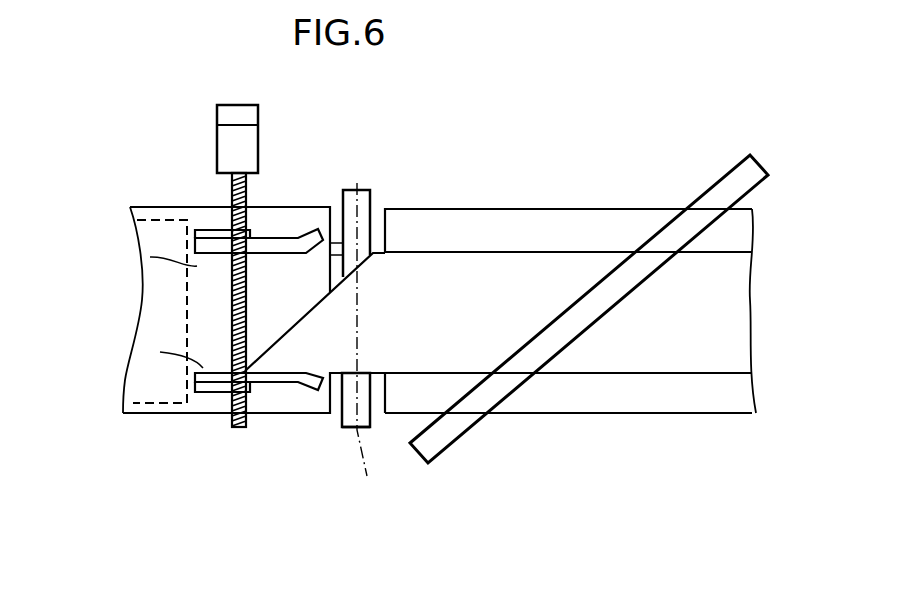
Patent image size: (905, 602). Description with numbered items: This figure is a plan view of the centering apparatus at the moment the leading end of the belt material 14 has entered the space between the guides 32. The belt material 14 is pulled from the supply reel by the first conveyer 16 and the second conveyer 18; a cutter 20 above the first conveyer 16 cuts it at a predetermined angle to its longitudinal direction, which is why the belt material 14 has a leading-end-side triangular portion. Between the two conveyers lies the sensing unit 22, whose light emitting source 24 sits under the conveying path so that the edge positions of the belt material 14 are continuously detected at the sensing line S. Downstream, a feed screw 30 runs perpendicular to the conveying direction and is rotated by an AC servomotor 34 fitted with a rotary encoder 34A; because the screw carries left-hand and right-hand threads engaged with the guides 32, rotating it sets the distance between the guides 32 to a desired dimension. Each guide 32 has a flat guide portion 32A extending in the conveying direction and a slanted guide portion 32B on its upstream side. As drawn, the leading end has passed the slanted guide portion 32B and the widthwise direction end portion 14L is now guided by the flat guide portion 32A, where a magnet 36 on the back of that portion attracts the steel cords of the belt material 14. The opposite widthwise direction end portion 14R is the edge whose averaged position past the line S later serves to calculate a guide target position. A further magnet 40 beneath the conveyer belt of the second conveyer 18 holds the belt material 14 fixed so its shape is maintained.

The belt material 14 is at (500, 343).
The widthwise direction end portion 14R is at (455, 252).
The widthwise direction end portion 14L is at (402, 375).
The first conveyer 16 is at (600, 415).
The second conveyer 18 is at (173, 415).
The cutter 20 is at (697, 200).
The sensing unit 22 is at (368, 189).
The light emitting source 24 is at (347, 437).
The feed screw 30 is at (237, 425).
The guide 32 is at (287, 237).
The flat guide portion 32A is at (150, 257).
The slanted guide portion 32B is at (334, 243).
The AC servomotor 34 is at (217, 137).
The rotary encoder 34A is at (263, 118).
The magnet 36 is at (202, 233).
The magnet 40 is at (148, 405).
The sensing line S is at (369, 344).